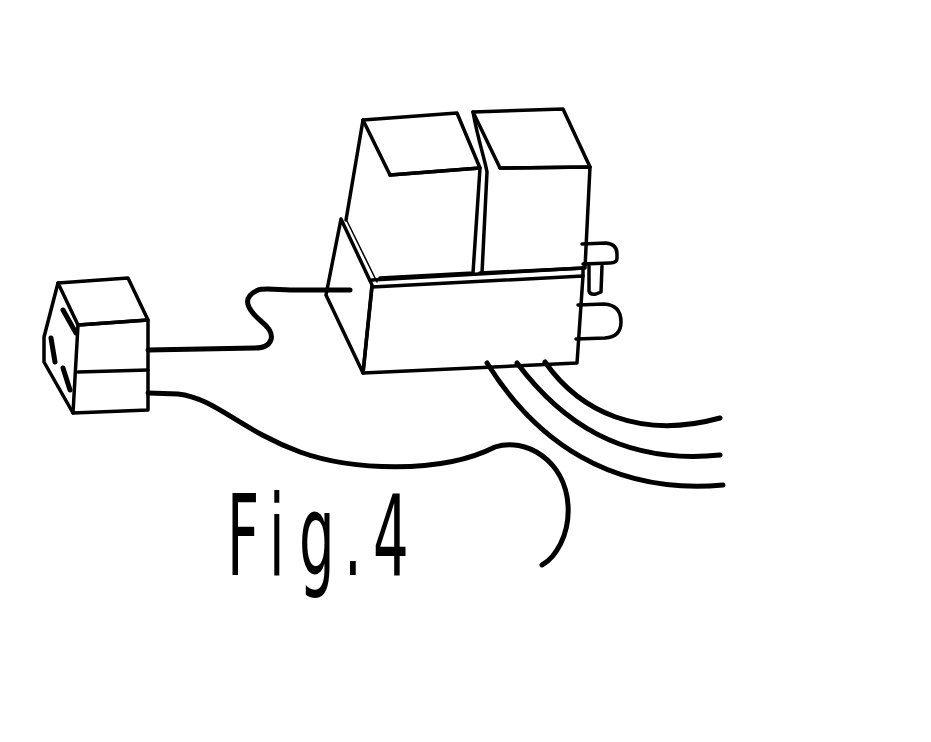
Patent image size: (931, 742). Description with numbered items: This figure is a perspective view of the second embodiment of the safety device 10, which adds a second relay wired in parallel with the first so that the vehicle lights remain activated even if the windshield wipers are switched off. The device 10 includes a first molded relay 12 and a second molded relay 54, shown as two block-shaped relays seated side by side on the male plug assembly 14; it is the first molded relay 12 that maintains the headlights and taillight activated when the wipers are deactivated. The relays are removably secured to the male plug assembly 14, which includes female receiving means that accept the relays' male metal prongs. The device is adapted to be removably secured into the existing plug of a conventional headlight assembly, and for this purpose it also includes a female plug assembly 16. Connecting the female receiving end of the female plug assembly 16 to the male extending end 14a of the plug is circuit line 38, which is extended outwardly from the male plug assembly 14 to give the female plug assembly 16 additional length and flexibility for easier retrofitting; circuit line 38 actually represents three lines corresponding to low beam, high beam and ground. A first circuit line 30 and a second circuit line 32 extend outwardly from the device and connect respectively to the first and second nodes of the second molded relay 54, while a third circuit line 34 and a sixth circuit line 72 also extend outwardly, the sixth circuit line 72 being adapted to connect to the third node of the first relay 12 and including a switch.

The safety device 10 is at (320, 238).
The first molded relay 12 is at (528, 132).
The second molded relay 54 is at (415, 137).
The male plug assembly 14 is at (433, 372).
The male extending end 14a is at (603, 250).
The female plug assembly 16 is at (113, 400).
The circuit line 38 is at (197, 350).
The third circuit line 34 is at (573, 512).
The sixth circuit line 72 is at (660, 418).
The second circuit line 32 is at (718, 450).
The first circuit line 30 is at (703, 493).